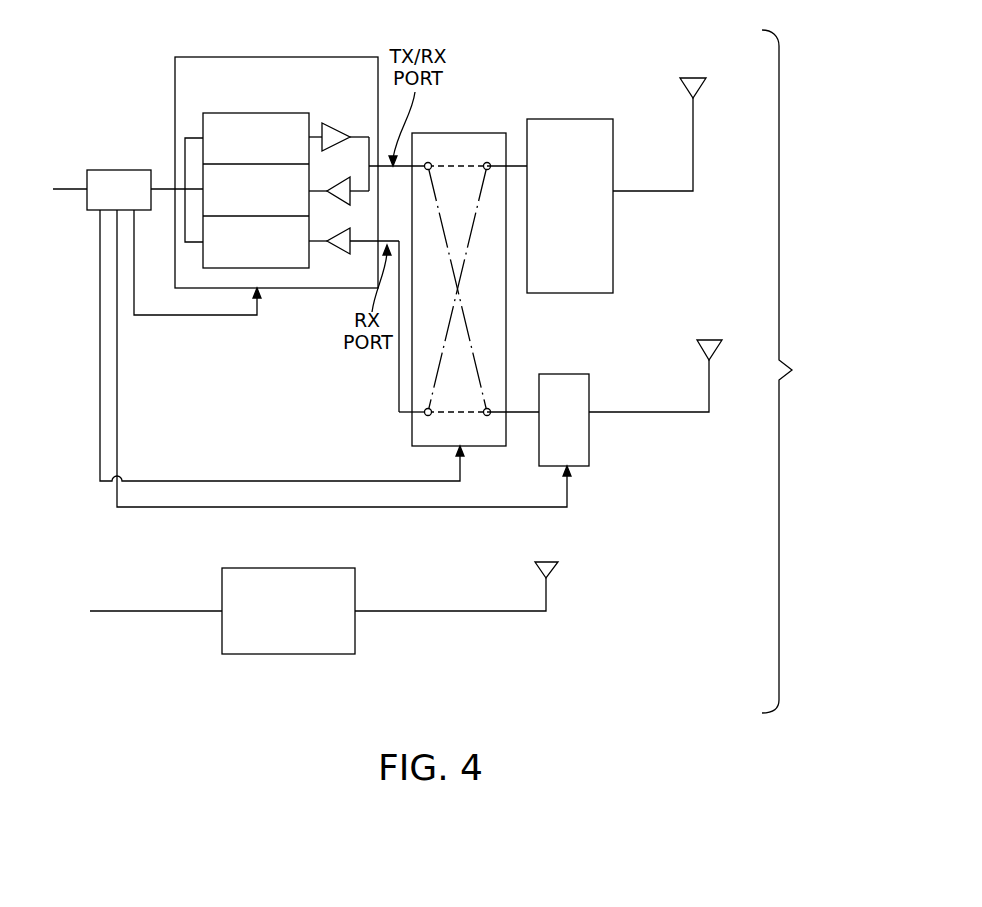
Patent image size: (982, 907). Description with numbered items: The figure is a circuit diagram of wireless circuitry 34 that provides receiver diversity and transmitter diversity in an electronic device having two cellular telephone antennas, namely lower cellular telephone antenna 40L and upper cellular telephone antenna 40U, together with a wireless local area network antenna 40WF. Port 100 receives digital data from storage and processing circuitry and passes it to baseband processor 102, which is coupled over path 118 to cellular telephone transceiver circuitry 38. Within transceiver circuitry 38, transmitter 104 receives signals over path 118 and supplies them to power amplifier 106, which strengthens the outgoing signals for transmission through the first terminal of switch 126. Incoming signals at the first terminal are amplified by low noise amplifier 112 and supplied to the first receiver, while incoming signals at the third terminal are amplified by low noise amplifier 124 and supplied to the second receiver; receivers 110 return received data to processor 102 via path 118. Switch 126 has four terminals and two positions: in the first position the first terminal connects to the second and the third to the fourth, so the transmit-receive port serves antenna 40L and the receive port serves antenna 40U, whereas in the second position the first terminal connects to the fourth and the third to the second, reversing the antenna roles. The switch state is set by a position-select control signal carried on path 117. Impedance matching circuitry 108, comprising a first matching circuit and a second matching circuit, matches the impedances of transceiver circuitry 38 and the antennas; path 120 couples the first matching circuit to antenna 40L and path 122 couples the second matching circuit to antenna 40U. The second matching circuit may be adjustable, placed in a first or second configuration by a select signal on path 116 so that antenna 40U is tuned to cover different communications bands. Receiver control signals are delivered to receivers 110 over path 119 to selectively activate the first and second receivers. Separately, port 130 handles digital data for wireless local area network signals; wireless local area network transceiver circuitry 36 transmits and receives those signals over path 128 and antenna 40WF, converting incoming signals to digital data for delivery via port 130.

The wireless circuitry 34 is at (792, 371).
The wireless local area network transceiver circuitry 36 is at (298, 654).
The cellular telephone transceiver circuitry 38 is at (280, 57).
The cellular telephone antenna 40L is at (713, 89).
The cellular telephone antenna 40U is at (731, 350).
The wireless local area network antenna 40WF is at (576, 569).
The port 100 is at (70, 190).
The baseband processor 102 is at (102, 170).
The transmitter 104 is at (250, 113).
The power amplifier 106 is at (331, 125).
The impedance matching circuitry 108 is at (569, 119).
The receivers 110 is at (277, 207).
The low noise amplifier 112 is at (334, 201).
The path 116 is at (117, 377).
The path 117 is at (100, 422).
The path 118 is at (155, 187).
The path 119 is at (134, 228).
The path 120 is at (643, 191).
The path 122 is at (650, 412).
The low noise amplifier 124 is at (334, 252).
The switch 126 is at (458, 133).
The path 128 is at (459, 611).
The port 130 is at (149, 611).